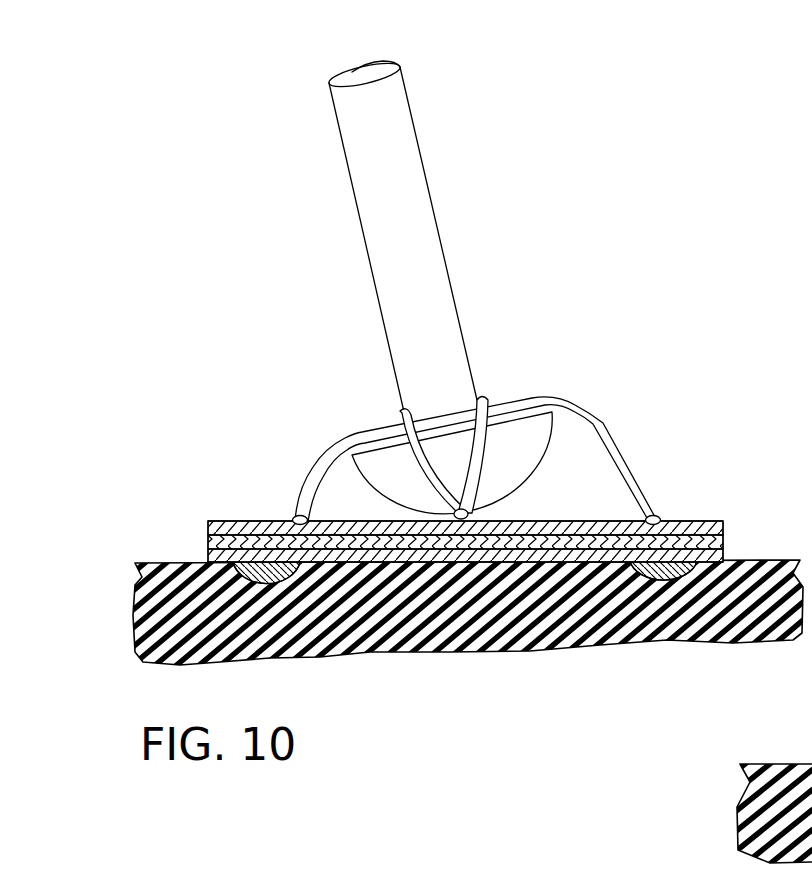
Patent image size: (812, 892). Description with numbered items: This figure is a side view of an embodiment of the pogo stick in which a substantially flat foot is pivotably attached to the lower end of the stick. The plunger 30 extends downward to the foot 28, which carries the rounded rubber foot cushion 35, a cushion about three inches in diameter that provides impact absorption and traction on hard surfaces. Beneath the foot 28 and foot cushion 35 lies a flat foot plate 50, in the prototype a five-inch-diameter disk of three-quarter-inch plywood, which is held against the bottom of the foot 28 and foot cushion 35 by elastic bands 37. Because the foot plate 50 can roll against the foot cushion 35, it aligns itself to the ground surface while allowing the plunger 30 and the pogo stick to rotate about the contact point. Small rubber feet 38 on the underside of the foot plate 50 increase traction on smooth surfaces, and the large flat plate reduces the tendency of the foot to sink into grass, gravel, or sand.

The foot 28 is at (532, 403).
The plunger 30 is at (433, 207).
The foot cushion 35 is at (556, 435).
The elastic bands 37 is at (480, 456).
The rubber feet 38 is at (285, 583).
The foot plate 50 is at (697, 520).